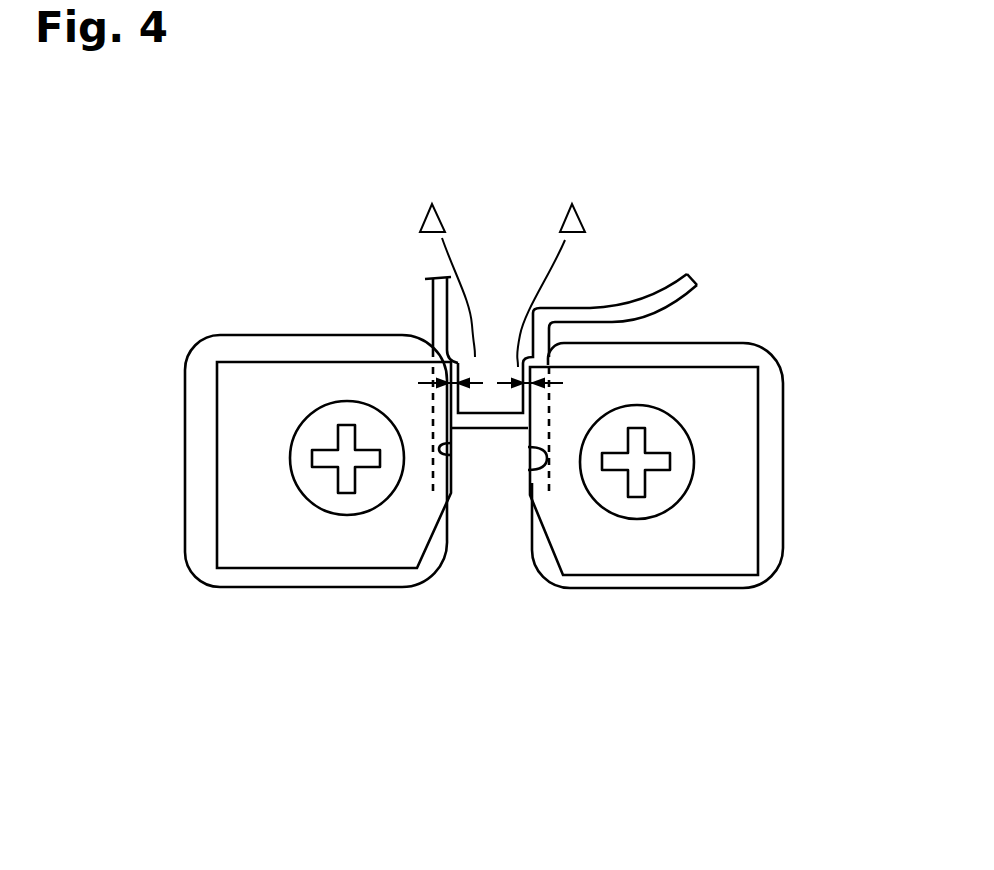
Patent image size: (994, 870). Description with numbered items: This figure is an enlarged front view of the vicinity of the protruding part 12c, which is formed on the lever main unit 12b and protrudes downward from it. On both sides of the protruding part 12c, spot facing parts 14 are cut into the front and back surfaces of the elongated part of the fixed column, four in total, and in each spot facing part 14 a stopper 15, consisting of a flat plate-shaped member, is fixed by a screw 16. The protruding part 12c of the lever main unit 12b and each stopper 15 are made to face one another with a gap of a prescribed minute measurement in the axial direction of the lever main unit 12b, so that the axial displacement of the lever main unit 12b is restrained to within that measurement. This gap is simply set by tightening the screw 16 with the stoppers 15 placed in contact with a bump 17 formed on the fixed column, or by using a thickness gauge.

The lever main unit 12b is at (637, 277).
The protruding part 12c is at (488, 390).
The spot facing part 14 is at (325, 578).
The stopper 15 is at (257, 535).
The screw 16 is at (317, 433).
The bump 17 is at (545, 460).